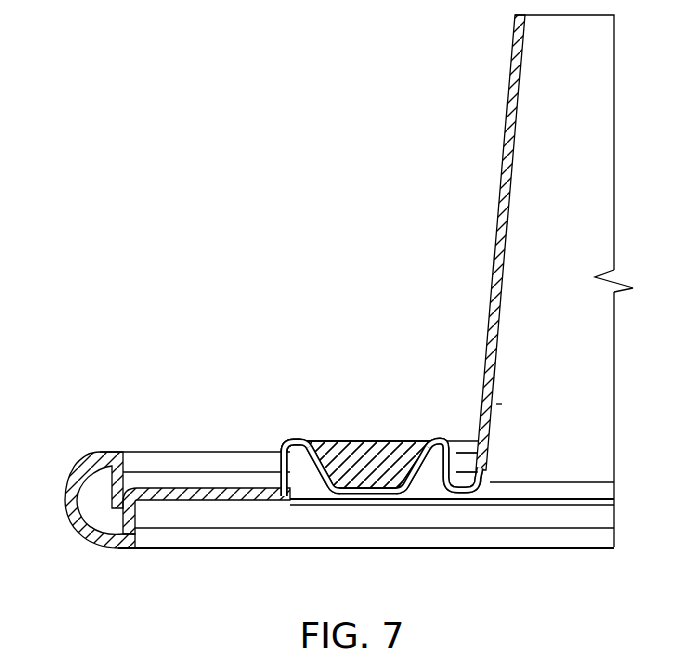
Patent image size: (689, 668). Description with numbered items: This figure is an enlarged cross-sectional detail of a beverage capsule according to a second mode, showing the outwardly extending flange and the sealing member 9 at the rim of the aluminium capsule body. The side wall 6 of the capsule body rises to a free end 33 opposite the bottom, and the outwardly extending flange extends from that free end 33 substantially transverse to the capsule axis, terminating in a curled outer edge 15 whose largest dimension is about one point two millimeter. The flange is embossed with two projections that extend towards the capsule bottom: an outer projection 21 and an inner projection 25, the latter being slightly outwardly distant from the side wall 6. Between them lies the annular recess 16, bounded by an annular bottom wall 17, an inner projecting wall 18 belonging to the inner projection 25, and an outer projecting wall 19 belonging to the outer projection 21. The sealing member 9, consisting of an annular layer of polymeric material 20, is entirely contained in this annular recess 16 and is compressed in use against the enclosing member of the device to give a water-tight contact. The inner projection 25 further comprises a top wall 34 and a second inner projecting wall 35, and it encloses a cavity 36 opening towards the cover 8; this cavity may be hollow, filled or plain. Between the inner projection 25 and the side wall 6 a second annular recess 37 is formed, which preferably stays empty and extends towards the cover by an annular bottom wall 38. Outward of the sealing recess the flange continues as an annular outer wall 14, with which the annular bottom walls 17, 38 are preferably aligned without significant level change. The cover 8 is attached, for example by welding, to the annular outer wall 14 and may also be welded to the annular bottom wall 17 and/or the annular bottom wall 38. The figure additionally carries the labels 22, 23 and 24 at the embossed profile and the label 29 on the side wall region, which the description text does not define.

The side wall 6 is at (516, 88).
The cover 8 is at (550, 500).
The sealing member 9 is at (405, 421).
The annular outer wall 14 is at (155, 532).
The curled outer edge 15 is at (77, 505).
The annular recess 16 is at (386, 476).
The annular bottom wall 17 is at (358, 496).
The inner projecting wall 18 is at (408, 496).
The outer projecting wall 19 is at (323, 496).
The annular layer of polymeric material 20 is at (348, 441).
The outer projection 21 is at (284, 430).
The foot of channel 22 is at (287, 496).
The top portion 23 is at (292, 441).
The flange 24 is at (283, 448).
The inner projection 25 is at (452, 428).
The side wall 29 is at (538, 294).
The free end 33 is at (494, 405).
The top wall 34 is at (441, 440).
The second inner projecting wall 35 is at (482, 471).
The cavity 36 is at (440, 496).
The second annular recess 37 is at (480, 455).
The annular bottom wall 38 is at (478, 496).